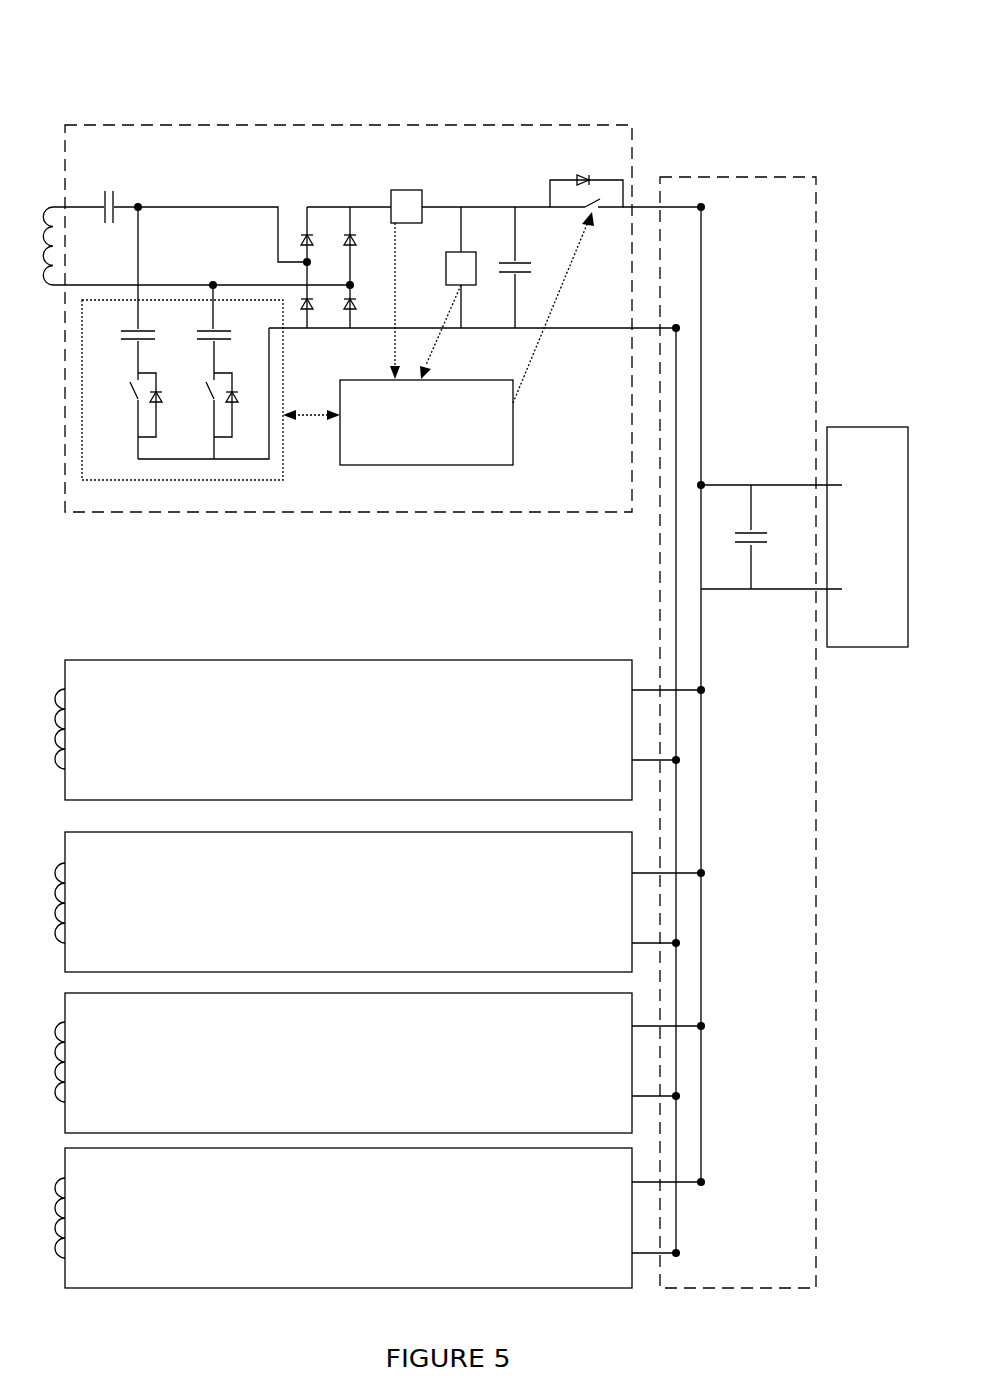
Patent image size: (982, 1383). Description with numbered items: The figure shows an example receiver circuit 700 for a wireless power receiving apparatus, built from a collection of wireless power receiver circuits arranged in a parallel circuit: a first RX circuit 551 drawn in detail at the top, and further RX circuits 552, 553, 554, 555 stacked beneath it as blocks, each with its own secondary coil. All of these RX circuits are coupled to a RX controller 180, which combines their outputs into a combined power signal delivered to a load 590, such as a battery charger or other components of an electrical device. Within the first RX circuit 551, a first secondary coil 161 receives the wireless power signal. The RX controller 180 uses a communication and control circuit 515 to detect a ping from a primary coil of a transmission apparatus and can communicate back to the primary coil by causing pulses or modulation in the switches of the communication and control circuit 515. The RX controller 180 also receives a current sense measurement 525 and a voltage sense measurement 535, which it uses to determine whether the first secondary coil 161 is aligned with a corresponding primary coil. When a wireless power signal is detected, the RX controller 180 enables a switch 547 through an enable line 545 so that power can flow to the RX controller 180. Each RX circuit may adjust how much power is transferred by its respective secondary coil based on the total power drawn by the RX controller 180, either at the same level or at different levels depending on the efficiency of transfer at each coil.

The wireless power receiver system 700 is at (124, 14).
The first RX circuit 551 is at (358, 124).
The first secondary coil 161 is at (53, 206).
The switch 547 is at (546, 148).
The current sense measurement 525 is at (394, 338).
The voltage sense measurement 535 is at (428, 370).
The enable line 545 is at (532, 374).
The communication and control circuit 515 is at (213, 480).
The RX controller 180 is at (805, 177).
The load 590 is at (875, 427).
The RX circuit 552 is at (291, 755).
The RX circuit 553 is at (291, 922).
The RX circuit 554 is at (291, 1084).
The RX circuit 555 is at (291, 1246).